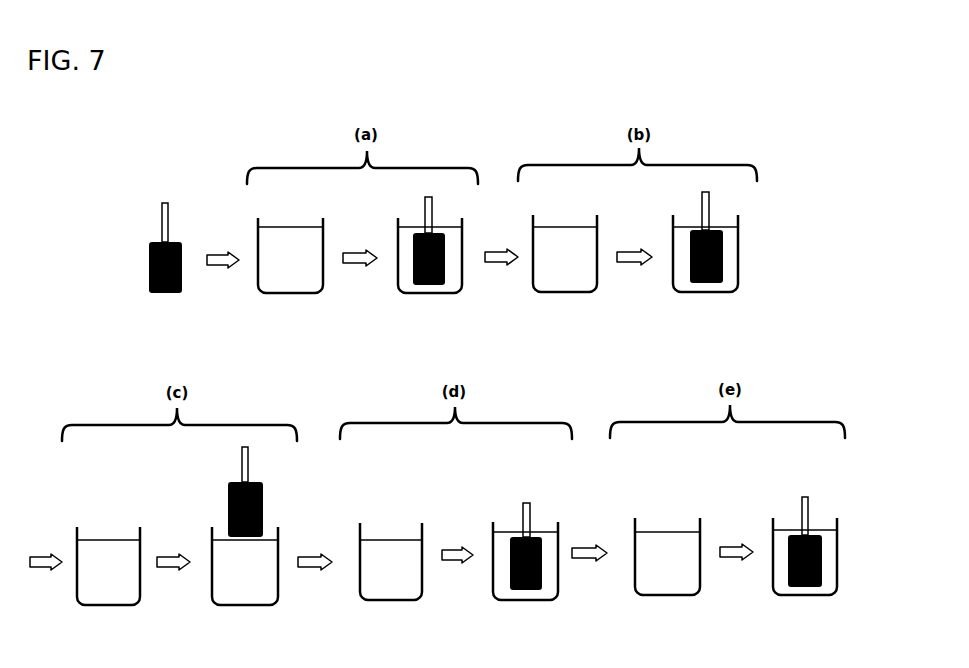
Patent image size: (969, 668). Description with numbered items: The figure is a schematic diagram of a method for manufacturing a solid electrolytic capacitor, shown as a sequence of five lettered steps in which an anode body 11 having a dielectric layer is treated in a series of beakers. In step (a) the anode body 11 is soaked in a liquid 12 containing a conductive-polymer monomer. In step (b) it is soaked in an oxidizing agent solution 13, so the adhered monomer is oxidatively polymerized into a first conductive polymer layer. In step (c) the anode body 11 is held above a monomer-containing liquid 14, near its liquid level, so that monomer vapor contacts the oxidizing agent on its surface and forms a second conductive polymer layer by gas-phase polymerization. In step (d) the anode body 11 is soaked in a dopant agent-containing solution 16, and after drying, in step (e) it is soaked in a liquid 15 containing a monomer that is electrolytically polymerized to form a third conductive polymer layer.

The anode body 11 is at (149, 258).
The liquid 12 is at (288, 247).
The oxidizing agent solution 13 is at (563, 250).
The monomer-containing liquid 14 is at (108, 550).
The liquid 15 is at (663, 545).
The dopant agent-containing solution 16 is at (393, 550).